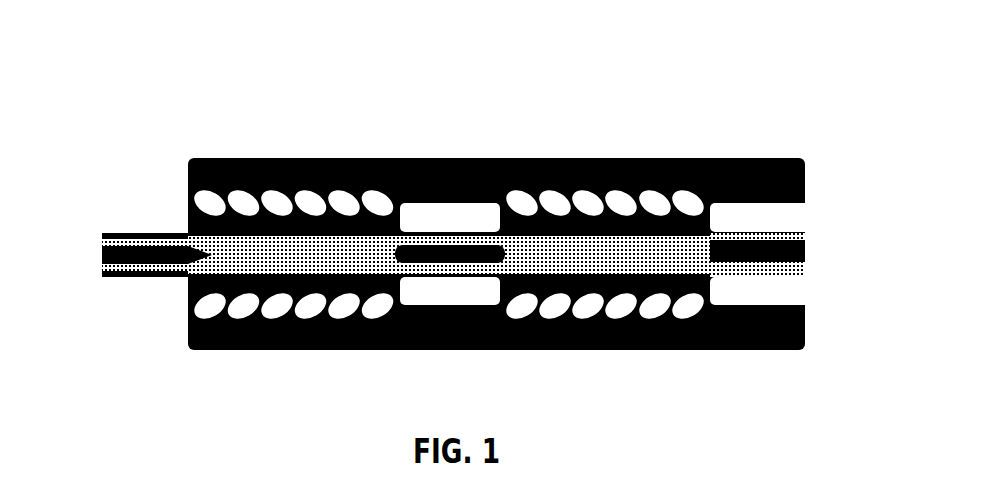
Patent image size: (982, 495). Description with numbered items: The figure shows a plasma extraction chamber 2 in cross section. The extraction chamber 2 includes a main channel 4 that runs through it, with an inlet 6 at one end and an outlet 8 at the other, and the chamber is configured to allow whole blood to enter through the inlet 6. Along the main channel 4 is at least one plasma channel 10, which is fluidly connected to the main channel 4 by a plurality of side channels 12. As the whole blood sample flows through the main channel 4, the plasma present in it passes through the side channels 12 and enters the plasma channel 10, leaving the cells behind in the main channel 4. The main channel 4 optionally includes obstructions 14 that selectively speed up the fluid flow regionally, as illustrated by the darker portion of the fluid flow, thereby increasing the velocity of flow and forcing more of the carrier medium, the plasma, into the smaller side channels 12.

The extraction chamber 2 is at (268, 131).
The main channel 4 is at (437, 234).
The inlet 6 is at (116, 240).
The outlet 8 is at (812, 218).
The plasma channel 10 is at (821, 178).
The side channels 12 is at (584, 183).
The obstructions 14 is at (423, 306).